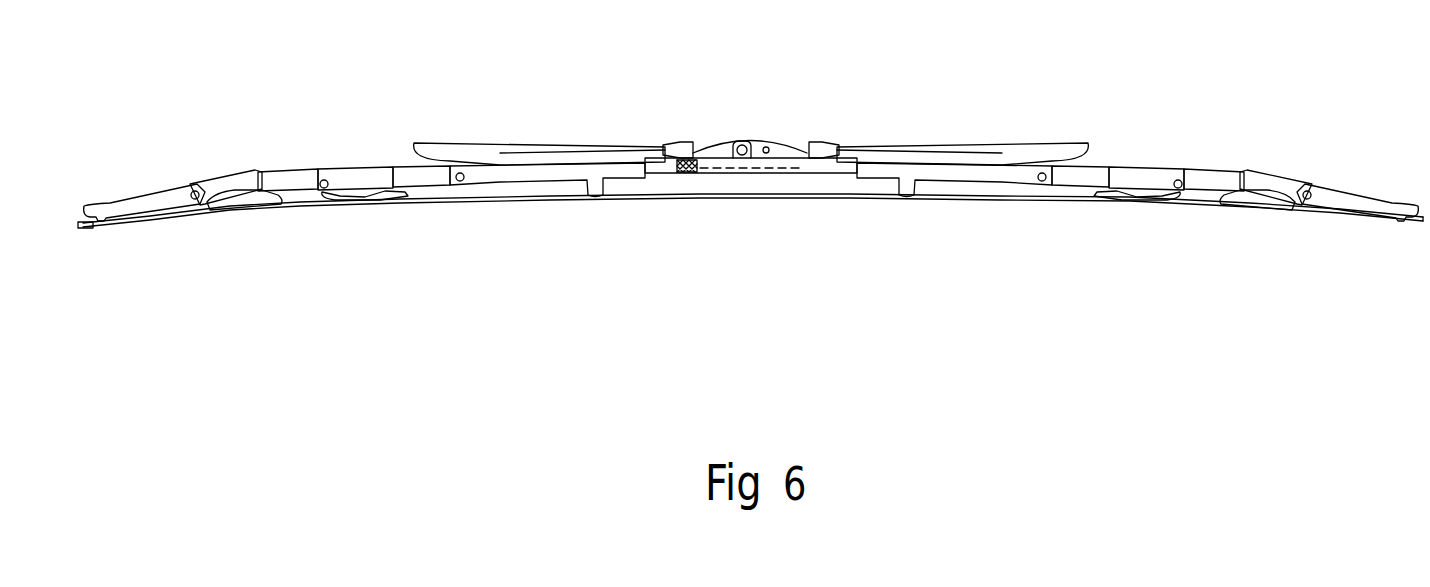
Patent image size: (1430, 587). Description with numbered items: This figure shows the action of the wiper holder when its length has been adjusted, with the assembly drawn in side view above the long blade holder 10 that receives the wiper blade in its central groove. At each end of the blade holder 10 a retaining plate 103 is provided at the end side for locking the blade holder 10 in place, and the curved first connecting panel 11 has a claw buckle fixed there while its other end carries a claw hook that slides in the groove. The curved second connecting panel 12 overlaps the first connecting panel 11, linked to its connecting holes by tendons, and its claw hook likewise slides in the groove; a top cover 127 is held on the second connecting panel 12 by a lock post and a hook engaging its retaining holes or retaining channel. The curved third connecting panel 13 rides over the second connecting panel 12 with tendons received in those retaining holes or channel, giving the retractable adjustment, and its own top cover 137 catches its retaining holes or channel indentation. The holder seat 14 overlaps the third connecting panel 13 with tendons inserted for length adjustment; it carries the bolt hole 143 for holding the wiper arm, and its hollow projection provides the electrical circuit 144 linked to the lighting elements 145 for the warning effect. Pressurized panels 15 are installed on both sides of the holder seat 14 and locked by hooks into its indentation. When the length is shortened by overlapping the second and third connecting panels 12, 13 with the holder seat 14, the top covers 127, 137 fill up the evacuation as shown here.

The blade holder 10 is at (797, 195).
The retaining plate 103 is at (83, 228).
The first connecting panel 11 is at (123, 208).
The second connecting panel 12 is at (205, 187).
The top cover 127 is at (282, 178).
The third connecting panel 13 is at (352, 180).
The top cover 137 is at (407, 182).
The holder seat 14 is at (550, 172).
The pressurized panel 15 is at (590, 152).
The lighting element 145 is at (682, 148).
The bolt hole 143 is at (745, 146).
The electrical circuit 144 is at (680, 174).